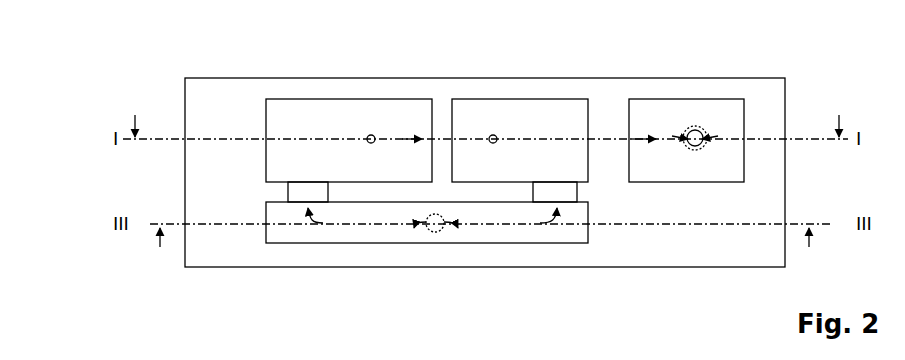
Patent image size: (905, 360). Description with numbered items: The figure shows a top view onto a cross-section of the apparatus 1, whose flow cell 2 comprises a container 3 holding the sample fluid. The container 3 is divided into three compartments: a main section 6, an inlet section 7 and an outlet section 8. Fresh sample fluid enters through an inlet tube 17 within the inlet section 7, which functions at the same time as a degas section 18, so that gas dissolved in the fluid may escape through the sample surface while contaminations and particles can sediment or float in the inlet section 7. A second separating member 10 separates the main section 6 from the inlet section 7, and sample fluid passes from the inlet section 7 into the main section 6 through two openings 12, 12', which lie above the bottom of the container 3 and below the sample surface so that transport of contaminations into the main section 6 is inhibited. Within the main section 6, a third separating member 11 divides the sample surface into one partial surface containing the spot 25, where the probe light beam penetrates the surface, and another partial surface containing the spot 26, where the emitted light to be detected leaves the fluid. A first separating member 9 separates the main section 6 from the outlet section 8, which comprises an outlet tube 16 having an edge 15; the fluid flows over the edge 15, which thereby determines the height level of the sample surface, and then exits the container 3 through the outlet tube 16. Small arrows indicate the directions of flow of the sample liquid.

The apparatus 1 is at (150, 52).
The flow cell 2 is at (485, 172).
The container 3 is at (185, 97).
The main section 6 is at (304, 118).
The inlet section 7 is at (388, 232).
The outlet section 8 is at (651, 115).
The first separating member 9 is at (606, 124).
The second separating member 10 is at (366, 192).
The third separating member 11 is at (441, 120).
The opening 12 is at (220, 183).
The opening 12' is at (596, 247).
The edge 15 is at (690, 128).
The outlet tube 16 is at (706, 128).
The inlet tube 17 is at (438, 232).
The degas section 18 is at (427, 222).
The spot 25 is at (371, 135).
The spot 26 is at (493, 135).